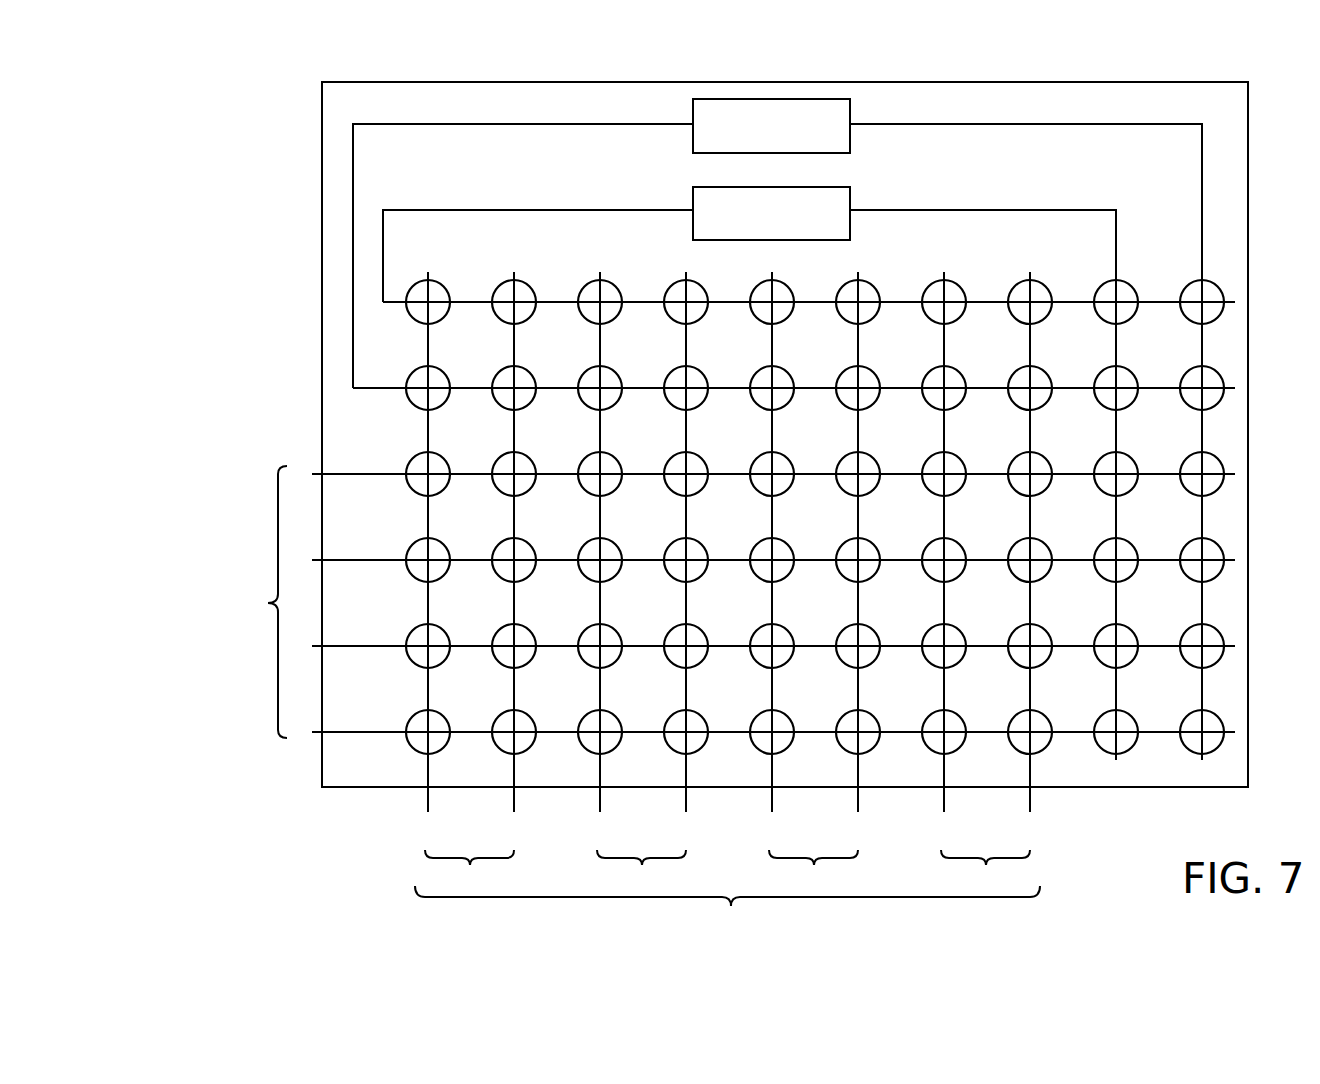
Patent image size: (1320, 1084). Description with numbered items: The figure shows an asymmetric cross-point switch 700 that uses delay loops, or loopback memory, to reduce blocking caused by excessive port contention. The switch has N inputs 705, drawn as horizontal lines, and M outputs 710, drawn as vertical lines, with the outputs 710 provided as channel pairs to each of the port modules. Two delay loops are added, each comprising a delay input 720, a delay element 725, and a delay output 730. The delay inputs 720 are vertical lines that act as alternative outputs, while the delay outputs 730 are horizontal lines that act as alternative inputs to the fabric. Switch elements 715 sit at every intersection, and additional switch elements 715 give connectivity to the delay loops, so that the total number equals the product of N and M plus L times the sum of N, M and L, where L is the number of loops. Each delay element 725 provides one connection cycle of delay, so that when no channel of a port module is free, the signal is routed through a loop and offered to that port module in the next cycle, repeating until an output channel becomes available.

The asymmetric cross-point switch 700 is at (1212, 108).
The N inputs 705 is at (696, 603).
The M outputs 710 is at (808, 545).
The switch elements 715 is at (1218, 286).
The delay input 720 is at (1170, 126).
The delay element 725 is at (834, 151).
The delay output 730 is at (387, 127).